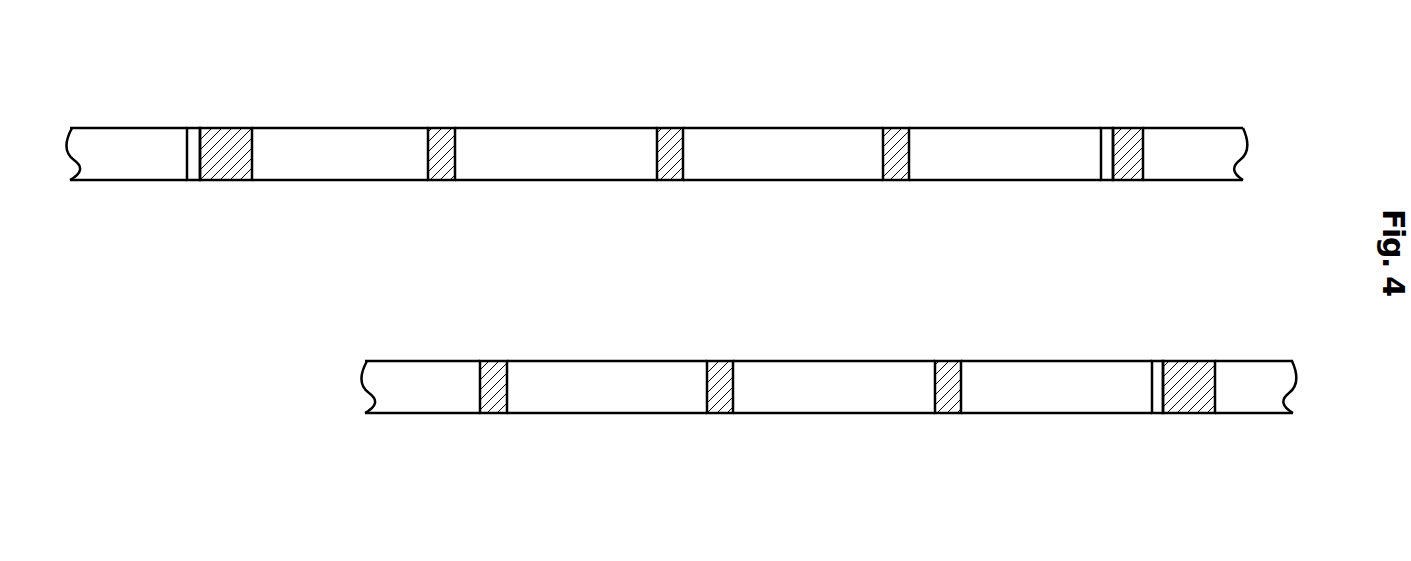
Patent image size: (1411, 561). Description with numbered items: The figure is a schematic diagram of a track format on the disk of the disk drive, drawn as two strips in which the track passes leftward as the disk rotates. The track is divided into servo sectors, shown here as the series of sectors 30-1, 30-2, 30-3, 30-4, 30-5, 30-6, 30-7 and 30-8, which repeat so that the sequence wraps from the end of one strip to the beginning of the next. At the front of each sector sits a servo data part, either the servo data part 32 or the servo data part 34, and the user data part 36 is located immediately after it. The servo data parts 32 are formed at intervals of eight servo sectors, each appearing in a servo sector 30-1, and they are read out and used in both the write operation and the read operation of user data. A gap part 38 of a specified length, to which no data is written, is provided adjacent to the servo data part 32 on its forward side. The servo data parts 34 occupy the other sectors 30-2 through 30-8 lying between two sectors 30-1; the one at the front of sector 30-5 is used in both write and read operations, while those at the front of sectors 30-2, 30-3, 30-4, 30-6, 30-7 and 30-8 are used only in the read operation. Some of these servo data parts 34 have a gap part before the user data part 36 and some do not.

The servo data part 32 is at (1204, 451).
The servo data part 34 is at (947, 451).
The user data part 36 is at (1265, 451).
The gap part 38 is at (1157, 451).
The servo sector 30-1 is at (427, 103).
The servo sector 30-2 is at (653, 103).
The servo sector 30-3 is at (880, 103).
The servo sector 30-4 is at (1110, 103).
The servo sector 30-5 is at (1117, 103).
The servo sector 30-6 is at (700, 339).
The servo sector 30-7 is at (928, 339).
The servo sector 30-8 is at (197, 103).